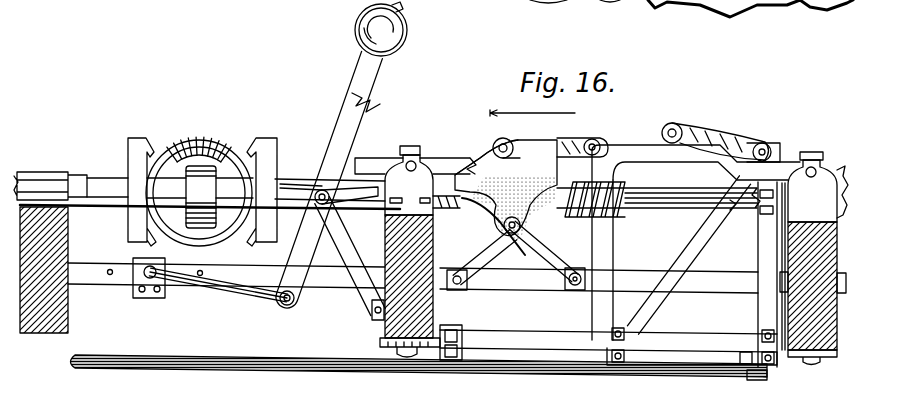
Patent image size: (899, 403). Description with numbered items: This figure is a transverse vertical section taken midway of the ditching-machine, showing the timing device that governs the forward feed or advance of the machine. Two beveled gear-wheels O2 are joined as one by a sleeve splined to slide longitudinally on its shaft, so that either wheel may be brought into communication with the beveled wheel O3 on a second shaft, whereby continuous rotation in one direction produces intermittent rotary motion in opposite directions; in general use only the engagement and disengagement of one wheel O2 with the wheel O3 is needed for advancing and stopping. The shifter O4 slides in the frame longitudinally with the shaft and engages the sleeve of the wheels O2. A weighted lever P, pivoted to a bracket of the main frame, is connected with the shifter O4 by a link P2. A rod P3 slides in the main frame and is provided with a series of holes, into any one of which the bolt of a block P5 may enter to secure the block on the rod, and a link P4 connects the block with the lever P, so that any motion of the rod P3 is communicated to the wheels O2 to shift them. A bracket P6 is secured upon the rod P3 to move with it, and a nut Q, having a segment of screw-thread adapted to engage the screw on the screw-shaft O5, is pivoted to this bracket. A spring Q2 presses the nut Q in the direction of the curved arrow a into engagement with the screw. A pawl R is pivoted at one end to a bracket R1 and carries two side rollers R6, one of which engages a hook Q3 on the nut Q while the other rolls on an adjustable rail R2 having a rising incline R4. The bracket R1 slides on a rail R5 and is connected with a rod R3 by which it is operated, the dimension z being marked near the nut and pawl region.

The beveled gear-wheels O2 is at (150, 130).
The beveled wheel O3 is at (205, 137).
The shifter O4 is at (226, 236).
The screw-shaft O5 is at (622, 190).
The weighted lever P is at (337, 128).
The link P2 is at (346, 204).
The rod P3 is at (262, 267).
The link P4 is at (240, 295).
The block P5 is at (155, 298).
The bracket P6 is at (561, 262).
The nut Q is at (506, 190).
The spring Q2 is at (493, 248).
The hook Q3 is at (532, 139).
The pawl R is at (594, 134).
The bracket R1 is at (462, 290).
The adjustable rail R2 is at (408, 156).
The rod R3 is at (232, 355).
The rising incline R4 is at (620, 145).
The rail R5 is at (548, 331).
The side rollers R6 is at (499, 139).
The curved arrow a is at (468, 222).
The distance z is at (532, 104).